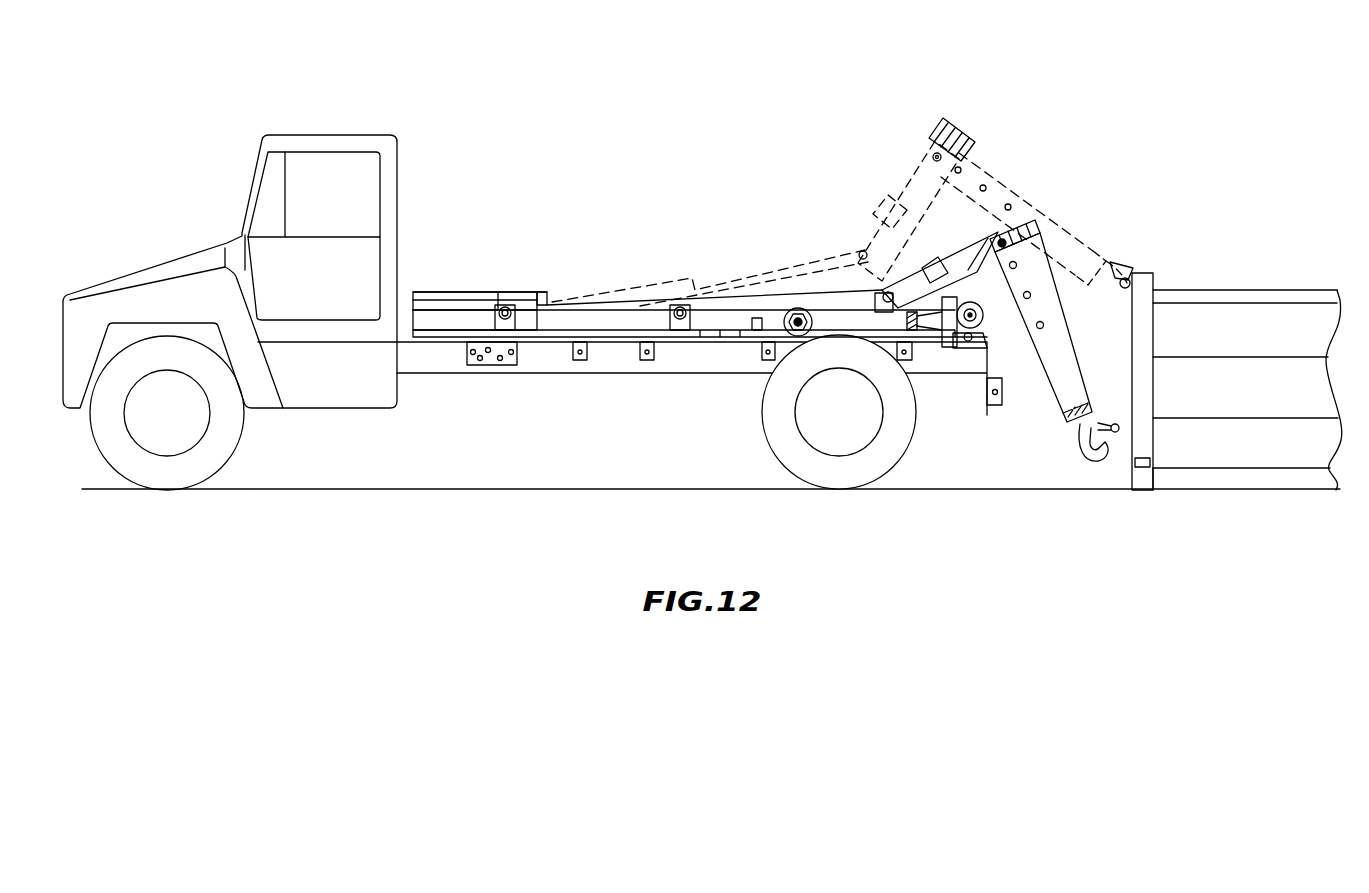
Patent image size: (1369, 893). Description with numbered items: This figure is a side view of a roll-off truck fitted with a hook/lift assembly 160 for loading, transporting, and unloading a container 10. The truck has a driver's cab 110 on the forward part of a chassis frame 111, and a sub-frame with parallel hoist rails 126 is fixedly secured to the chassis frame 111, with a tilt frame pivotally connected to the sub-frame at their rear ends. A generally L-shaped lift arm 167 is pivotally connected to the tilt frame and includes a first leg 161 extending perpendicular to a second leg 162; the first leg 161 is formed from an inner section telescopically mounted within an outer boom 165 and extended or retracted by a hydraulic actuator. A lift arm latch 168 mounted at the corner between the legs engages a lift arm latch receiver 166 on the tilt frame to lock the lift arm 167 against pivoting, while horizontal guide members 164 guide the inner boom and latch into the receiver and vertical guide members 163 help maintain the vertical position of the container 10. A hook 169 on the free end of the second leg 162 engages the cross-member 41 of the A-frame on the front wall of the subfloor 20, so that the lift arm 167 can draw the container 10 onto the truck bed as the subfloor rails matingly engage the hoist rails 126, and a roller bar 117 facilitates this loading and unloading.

The container 10 is at (1268, 288).
The subfloor 20 is at (1210, 477).
The cross-member 41 is at (1127, 266).
The driver's cab 110 is at (207, 245).
The chassis frame 111 is at (472, 378).
The roller bar 117 is at (1000, 308).
The hoist rail 126 is at (620, 323).
The hook/lift assembly 160 is at (757, 80).
The first leg 161 is at (957, 245).
The second leg 162 is at (1050, 388).
The vertical guide member 163 is at (428, 292).
The horizontal guide member 164 is at (543, 292).
The outer boom 165 is at (903, 280).
The lift arm latch receiver 166 is at (486, 300).
The lift arm 167 is at (932, 128).
The lift arm latch 168 is at (1033, 233).
The hook 169 is at (1087, 462).